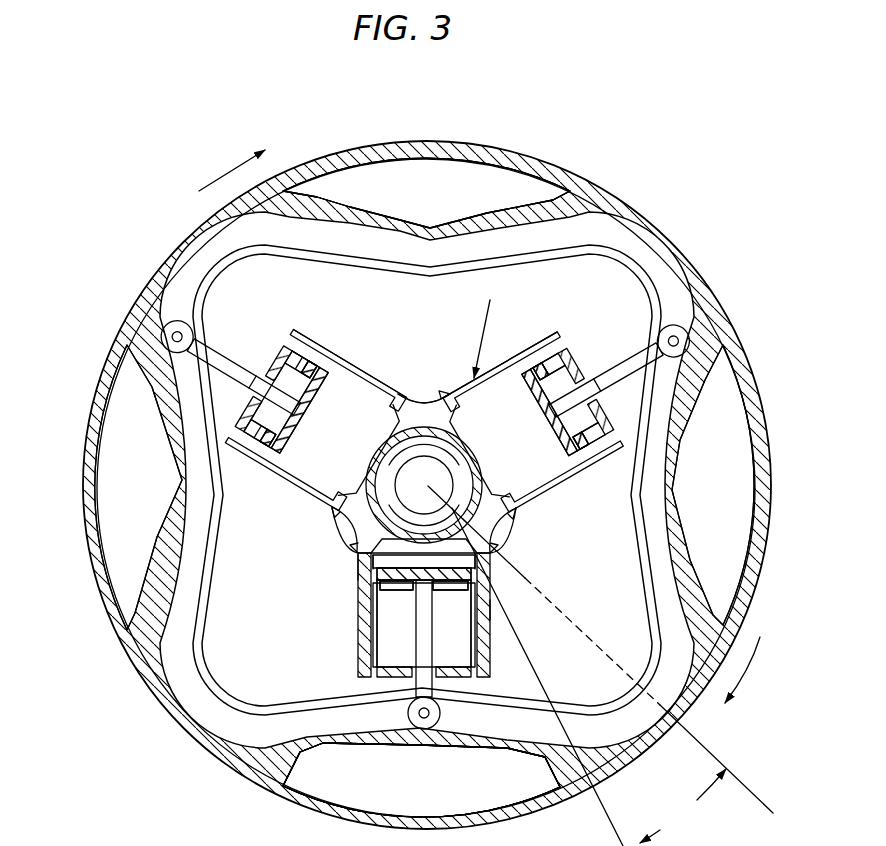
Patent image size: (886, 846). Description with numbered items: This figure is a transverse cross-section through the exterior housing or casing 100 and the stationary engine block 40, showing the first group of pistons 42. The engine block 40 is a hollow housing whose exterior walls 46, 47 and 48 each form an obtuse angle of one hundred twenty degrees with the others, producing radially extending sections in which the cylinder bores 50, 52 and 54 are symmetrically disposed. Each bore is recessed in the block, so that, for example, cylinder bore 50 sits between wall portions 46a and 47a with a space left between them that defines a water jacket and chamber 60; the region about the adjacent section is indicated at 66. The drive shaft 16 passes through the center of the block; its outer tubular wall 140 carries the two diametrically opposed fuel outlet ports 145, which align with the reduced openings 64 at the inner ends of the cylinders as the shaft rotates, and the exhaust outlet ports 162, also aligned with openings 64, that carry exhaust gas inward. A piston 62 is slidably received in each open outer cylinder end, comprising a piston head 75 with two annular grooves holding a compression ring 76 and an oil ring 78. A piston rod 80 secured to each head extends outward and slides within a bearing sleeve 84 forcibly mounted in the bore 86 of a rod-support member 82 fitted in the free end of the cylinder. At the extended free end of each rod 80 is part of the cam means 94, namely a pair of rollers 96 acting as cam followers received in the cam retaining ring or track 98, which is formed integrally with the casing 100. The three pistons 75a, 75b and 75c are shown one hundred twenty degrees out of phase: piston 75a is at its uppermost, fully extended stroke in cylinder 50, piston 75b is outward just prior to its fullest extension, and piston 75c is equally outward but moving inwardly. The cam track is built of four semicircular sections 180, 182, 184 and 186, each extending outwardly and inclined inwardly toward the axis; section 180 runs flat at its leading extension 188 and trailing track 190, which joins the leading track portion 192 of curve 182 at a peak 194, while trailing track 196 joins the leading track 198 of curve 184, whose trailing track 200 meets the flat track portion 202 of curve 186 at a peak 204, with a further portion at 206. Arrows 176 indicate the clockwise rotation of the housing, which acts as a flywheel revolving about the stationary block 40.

The drive shaft 16 is at (480, 553).
The engine block 40 is at (368, 383).
The first group of pistons 42 is at (476, 328).
The exterior wall 46 is at (382, 527).
The wall portion 46a is at (368, 615).
The exterior wall 47 is at (497, 527).
The wall portion 47a is at (490, 611).
The exterior wall 48 is at (430, 403).
The cylinder bore 50 is at (387, 641).
The cylinder bore 52 is at (537, 472).
The cylinder bore 54 is at (311, 460).
The water jacket and chamber 60 is at (380, 547).
The piston 62 is at (330, 398).
The reduced opening 64 is at (370, 456).
The rotor outline 66 is at (355, 507).
The piston head 75 is at (540, 380).
The piston 75a is at (458, 583).
The piston 75b is at (531, 380).
The piston 75c is at (281, 433).
The compression ring 76 is at (321, 386).
The oil ring 78 is at (296, 372).
The piston rod 80 is at (218, 360).
The rod-support member 82 is at (275, 345).
The bearing sleeve 84 is at (262, 406).
The bore 86 is at (265, 372).
The cam means 94 is at (168, 326).
The rollers 96 is at (160, 337).
The cam retaining ring or track 98 is at (290, 740).
The exterior housing or casing 100 is at (143, 678).
The outer tubular wall 140 is at (424, 556).
The fuel outlet ports 145 is at (458, 428).
The exhaust outlet ports 162 is at (424, 484).
The arrows 176 is at (223, 170).
The semi-circular section 180 is at (633, 277).
The semi-circular section 182 is at (208, 252).
The semi-circular section 184 is at (210, 705).
The semi-circular section 186 is at (637, 713).
The leading extension 188 is at (665, 406).
The trailing track 190 is at (518, 242).
The leading track portion 192 is at (334, 243).
The peak 194 is at (427, 236).
The trailing track 196 is at (135, 390).
The leading track 198 is at (185, 540).
The trailing track 200 is at (323, 730).
The flat track portion 202 is at (513, 730).
The peak 204 is at (413, 727).
The coolant passage 206 is at (668, 597).